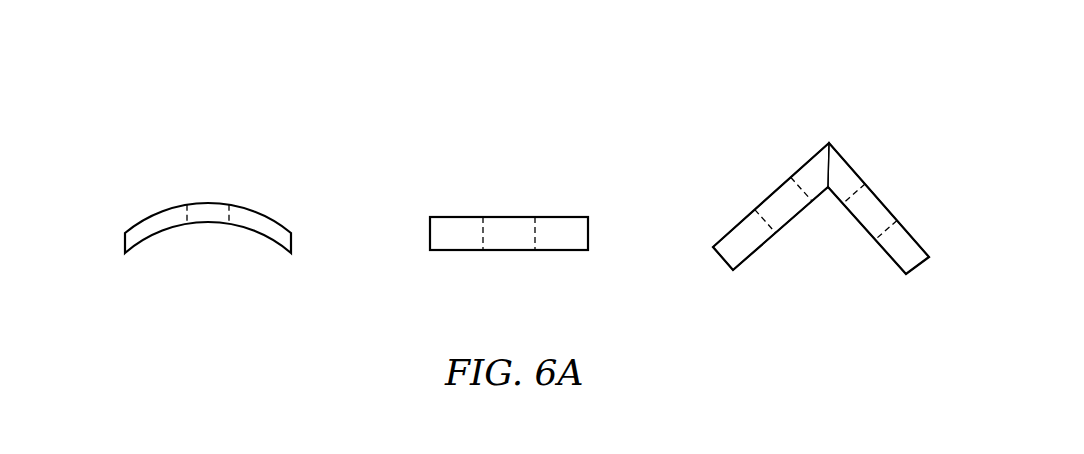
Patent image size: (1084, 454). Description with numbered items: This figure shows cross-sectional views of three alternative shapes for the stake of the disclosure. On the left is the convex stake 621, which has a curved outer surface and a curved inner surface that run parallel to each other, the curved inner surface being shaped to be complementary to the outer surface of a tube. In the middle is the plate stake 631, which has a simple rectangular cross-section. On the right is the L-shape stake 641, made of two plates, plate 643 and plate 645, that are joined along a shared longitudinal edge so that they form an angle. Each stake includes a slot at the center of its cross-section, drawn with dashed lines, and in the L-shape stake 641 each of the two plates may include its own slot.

The convex stake 621 is at (140, 149).
The plate stake 631 is at (457, 164).
The L-shape stake 641 is at (712, 116).
The plate 643 is at (753, 256).
The plate 645 is at (888, 258).